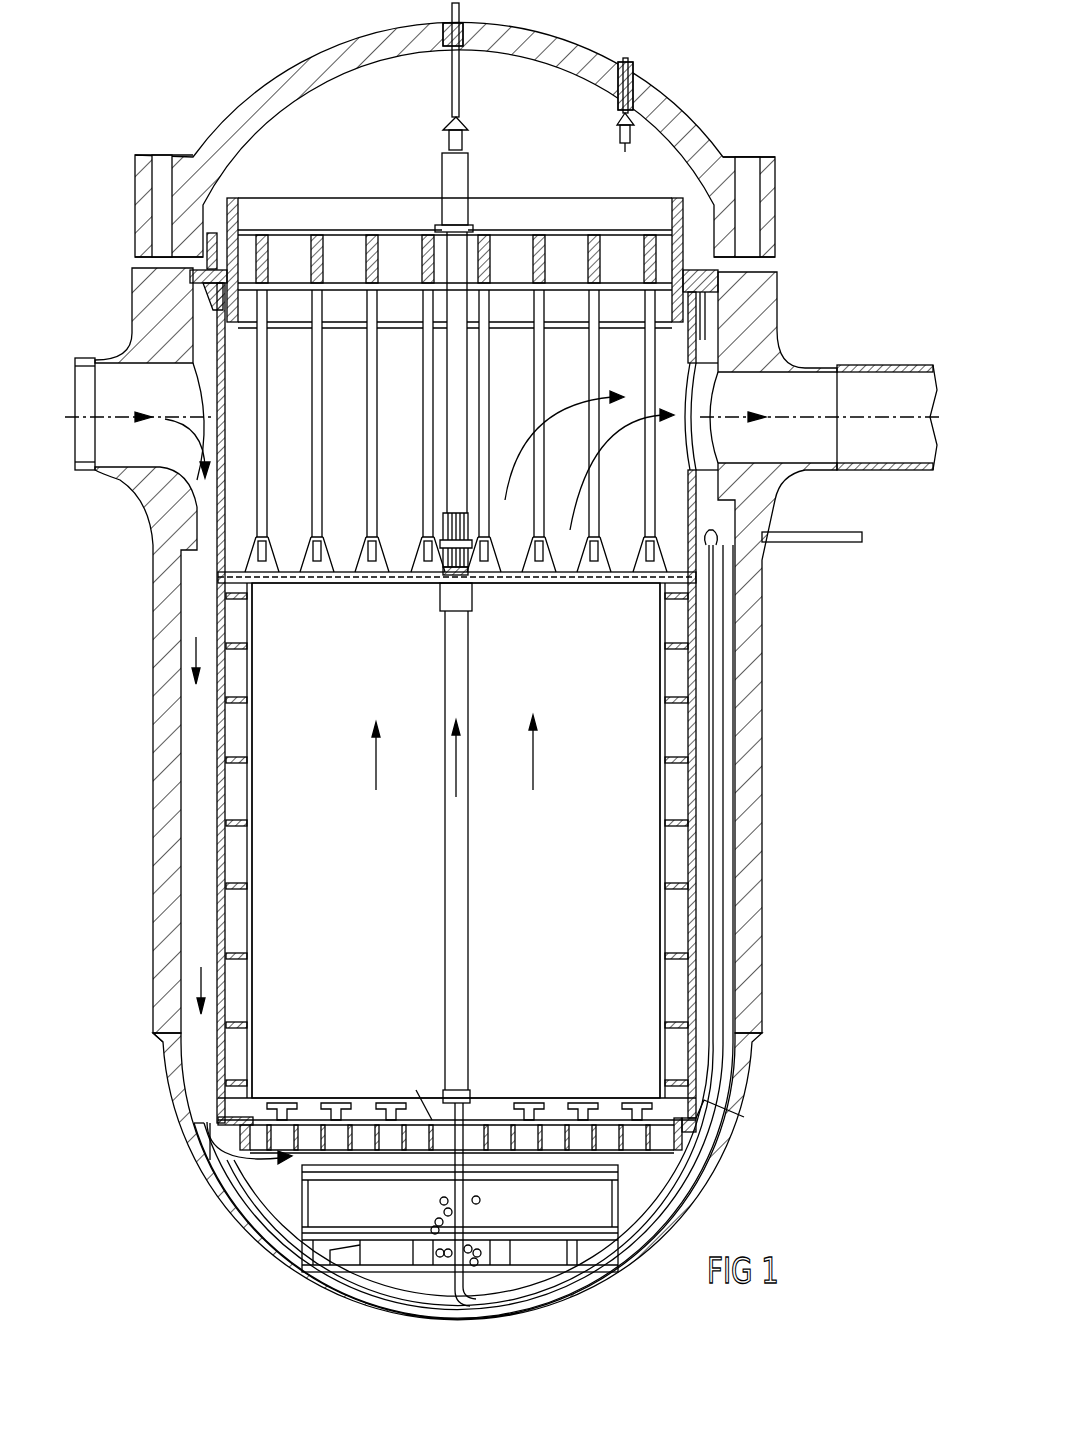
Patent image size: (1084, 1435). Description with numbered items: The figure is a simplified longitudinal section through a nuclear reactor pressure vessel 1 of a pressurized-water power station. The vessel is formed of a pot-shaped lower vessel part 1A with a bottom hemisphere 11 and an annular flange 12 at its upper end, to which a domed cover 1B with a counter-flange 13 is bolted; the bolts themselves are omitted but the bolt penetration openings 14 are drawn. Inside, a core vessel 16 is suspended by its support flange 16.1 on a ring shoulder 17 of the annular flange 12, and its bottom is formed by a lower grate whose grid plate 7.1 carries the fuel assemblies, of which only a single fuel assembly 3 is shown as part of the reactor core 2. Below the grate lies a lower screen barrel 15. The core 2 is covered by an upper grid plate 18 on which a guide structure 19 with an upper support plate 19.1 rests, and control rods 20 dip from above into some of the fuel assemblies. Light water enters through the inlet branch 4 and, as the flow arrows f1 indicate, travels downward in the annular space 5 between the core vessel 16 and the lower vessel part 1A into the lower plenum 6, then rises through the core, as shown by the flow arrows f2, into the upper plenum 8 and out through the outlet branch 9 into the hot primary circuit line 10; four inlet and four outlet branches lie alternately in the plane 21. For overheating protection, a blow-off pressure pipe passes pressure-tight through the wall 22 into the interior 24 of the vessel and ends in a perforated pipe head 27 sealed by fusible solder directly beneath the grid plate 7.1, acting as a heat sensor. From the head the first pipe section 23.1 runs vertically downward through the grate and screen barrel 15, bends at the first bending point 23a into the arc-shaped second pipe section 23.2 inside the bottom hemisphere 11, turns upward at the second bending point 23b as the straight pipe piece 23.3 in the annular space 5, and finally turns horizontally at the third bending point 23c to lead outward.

The reactor pressure vessel 1 is at (466, 660).
The lower vessel part 1A is at (160, 1075).
The domed cover 1B is at (550, 44).
The reactor core 2 is at (637, 678).
The fuel assembly 3 is at (468, 930).
The inlet branch 4 is at (502, 417).
The annular space 5 is at (200, 838).
The lower plenum 6 is at (247, 1192).
The grid plate 7.1 is at (608, 1117).
The upper plenum 8 is at (456, 349).
The outlet branch 9 is at (790, 362).
The hot primary circuit line 10 is at (870, 472).
The bottom hemisphere 11 is at (464, 1215).
The annular flange 12 is at (722, 282).
The counter-flange 13 is at (195, 265).
The bolt penetration openings 14 is at (163, 170).
The lower screen barrel 15 is at (313, 1280).
The core vessel 16 is at (690, 925).
The support flange 16.1 is at (190, 297).
The ring shoulder 17 is at (718, 300).
The upper grid plate 18 is at (553, 580).
The guide structure 19 is at (368, 395).
The upper support plate 19.1 is at (326, 222).
The control rods 20 is at (450, 172).
The plane 21 is at (80, 388).
The wall 22 is at (175, 1097).
The first pipe section 23.1 is at (477, 1210).
The second pipe section 23.2 is at (692, 1173).
The straight pipe piece 23.3 is at (715, 606).
The first bending point 23a is at (463, 1305).
The second bending point 23b is at (717, 1108).
The third bending point 23c is at (765, 512).
The interior of the pressure vessel 24 is at (578, 881).
The perforated pipe head 27 is at (464, 1117).
The flow arrows f1 is at (194, 655).
The flow arrows f2 is at (377, 766).